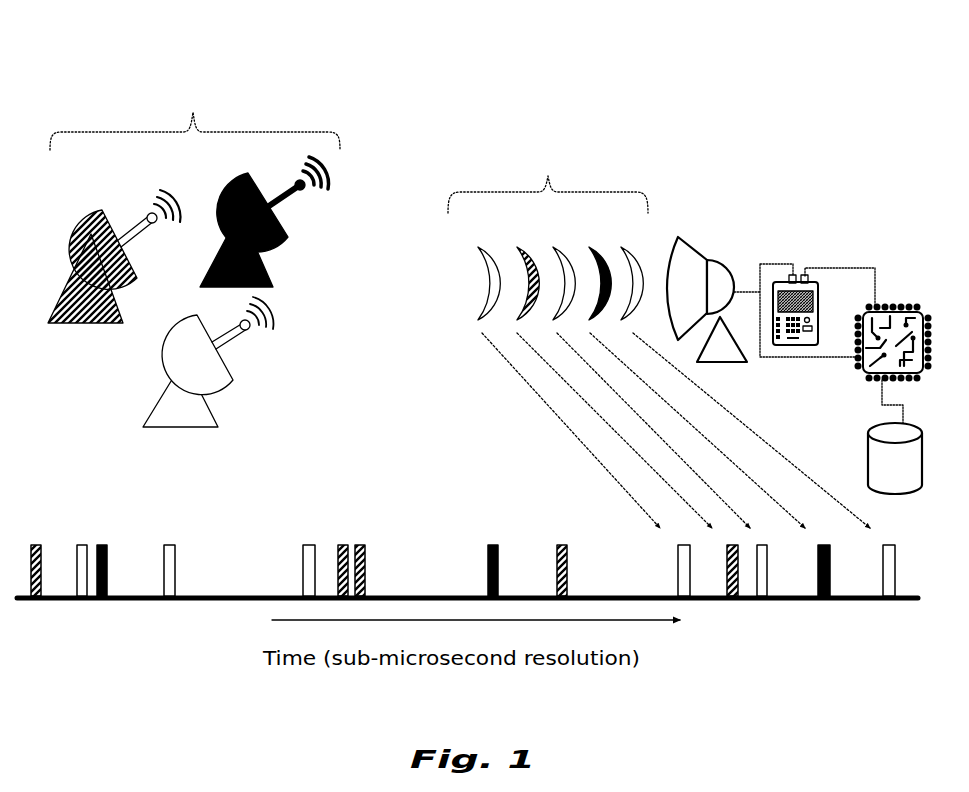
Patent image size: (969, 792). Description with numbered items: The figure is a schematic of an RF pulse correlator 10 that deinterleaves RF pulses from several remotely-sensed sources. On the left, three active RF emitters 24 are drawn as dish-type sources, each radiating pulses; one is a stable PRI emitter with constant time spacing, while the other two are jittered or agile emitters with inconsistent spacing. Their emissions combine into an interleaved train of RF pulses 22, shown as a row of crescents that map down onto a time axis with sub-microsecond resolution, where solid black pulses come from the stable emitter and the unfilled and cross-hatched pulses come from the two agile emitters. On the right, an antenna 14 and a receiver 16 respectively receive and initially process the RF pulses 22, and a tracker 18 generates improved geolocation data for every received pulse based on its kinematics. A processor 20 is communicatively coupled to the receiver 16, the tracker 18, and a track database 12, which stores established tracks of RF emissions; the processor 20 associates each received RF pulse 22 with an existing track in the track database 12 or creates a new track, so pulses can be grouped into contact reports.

The RF pulse correlator 10 is at (656, 91).
The track database 12 is at (867, 478).
The antenna 14 is at (668, 265).
The receiver 16 is at (717, 262).
The tracker 18 is at (803, 272).
The processor 20 is at (890, 305).
The RF pulses 22 is at (477, 310).
The RF emitters 24 is at (270, 289).